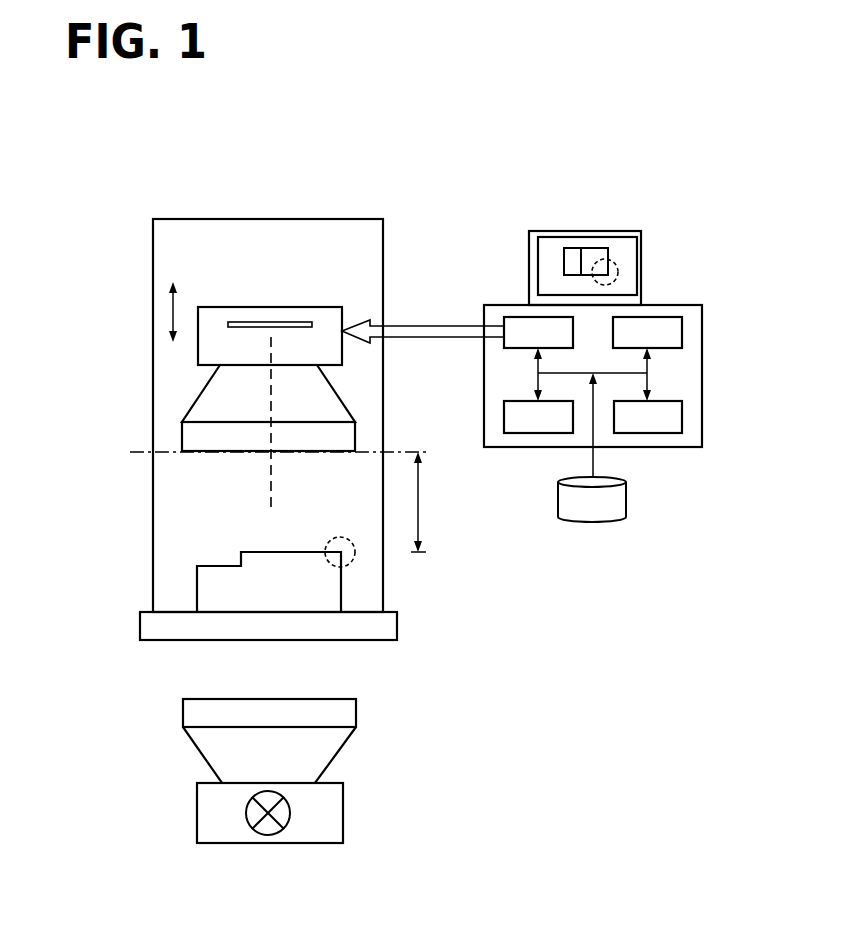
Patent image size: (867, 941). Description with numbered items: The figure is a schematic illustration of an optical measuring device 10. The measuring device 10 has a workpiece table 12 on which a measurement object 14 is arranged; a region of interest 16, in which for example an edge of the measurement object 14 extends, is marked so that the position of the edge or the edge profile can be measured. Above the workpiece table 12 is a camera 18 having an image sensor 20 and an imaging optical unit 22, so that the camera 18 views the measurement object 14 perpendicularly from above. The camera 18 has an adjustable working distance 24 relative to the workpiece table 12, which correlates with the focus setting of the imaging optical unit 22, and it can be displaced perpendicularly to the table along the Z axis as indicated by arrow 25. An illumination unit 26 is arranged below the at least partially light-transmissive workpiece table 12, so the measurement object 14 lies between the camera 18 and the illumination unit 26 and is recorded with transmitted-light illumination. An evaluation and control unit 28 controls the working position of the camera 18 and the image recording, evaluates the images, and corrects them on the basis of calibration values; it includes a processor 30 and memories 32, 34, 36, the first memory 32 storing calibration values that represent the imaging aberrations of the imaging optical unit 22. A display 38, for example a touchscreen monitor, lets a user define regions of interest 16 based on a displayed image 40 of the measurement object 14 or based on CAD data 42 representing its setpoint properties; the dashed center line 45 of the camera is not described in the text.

The measuring device 10 is at (112, 664).
The workpiece table 12 is at (387, 622).
The measurement object 14 is at (197, 586).
The region of interest 16 is at (354, 562).
The camera 18 is at (184, 378).
The image sensor 20 is at (288, 322).
The imaging optical unit 22 is at (185, 430).
The working distance 24 is at (425, 550).
The arrow 25 is at (172, 301).
The illumination unit 26 is at (338, 812).
The evaluation and control unit 28 is at (672, 447).
The processor 30 is at (513, 317).
The first memory 32 is at (682, 333).
The memory 34 is at (682, 417).
The memory 36 is at (532, 447).
The display 38 is at (581, 231).
The displayed image 40 is at (628, 247).
The CAD data 42 is at (607, 522).
The optical axis / focal plane 45 is at (271, 492).